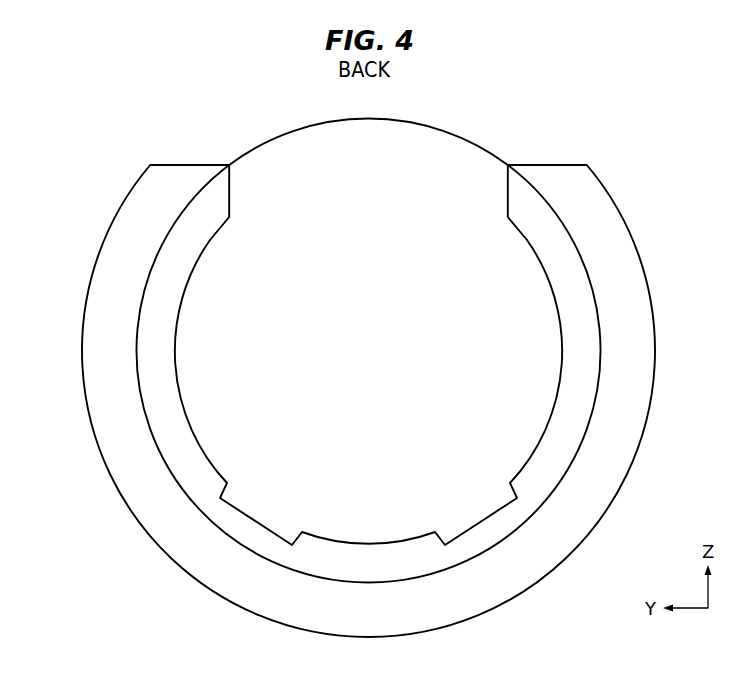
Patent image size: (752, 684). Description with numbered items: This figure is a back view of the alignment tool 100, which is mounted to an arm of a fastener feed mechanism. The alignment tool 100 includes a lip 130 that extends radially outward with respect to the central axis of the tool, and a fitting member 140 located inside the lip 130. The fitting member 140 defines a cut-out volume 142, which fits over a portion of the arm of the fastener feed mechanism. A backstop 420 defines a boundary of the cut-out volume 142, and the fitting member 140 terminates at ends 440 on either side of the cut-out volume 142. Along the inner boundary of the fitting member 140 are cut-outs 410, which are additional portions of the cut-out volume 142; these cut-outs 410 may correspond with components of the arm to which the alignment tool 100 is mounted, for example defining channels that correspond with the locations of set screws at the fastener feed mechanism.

The alignment tool 100 is at (80, 528).
The lip 130 is at (639, 257).
The fitting member 140 is at (600, 360).
The cut-out volume 142 is at (454, 112).
The cut-outs 410 is at (272, 508).
The backstop 420 is at (277, 137).
The ends of fitting member 440 is at (230, 195).